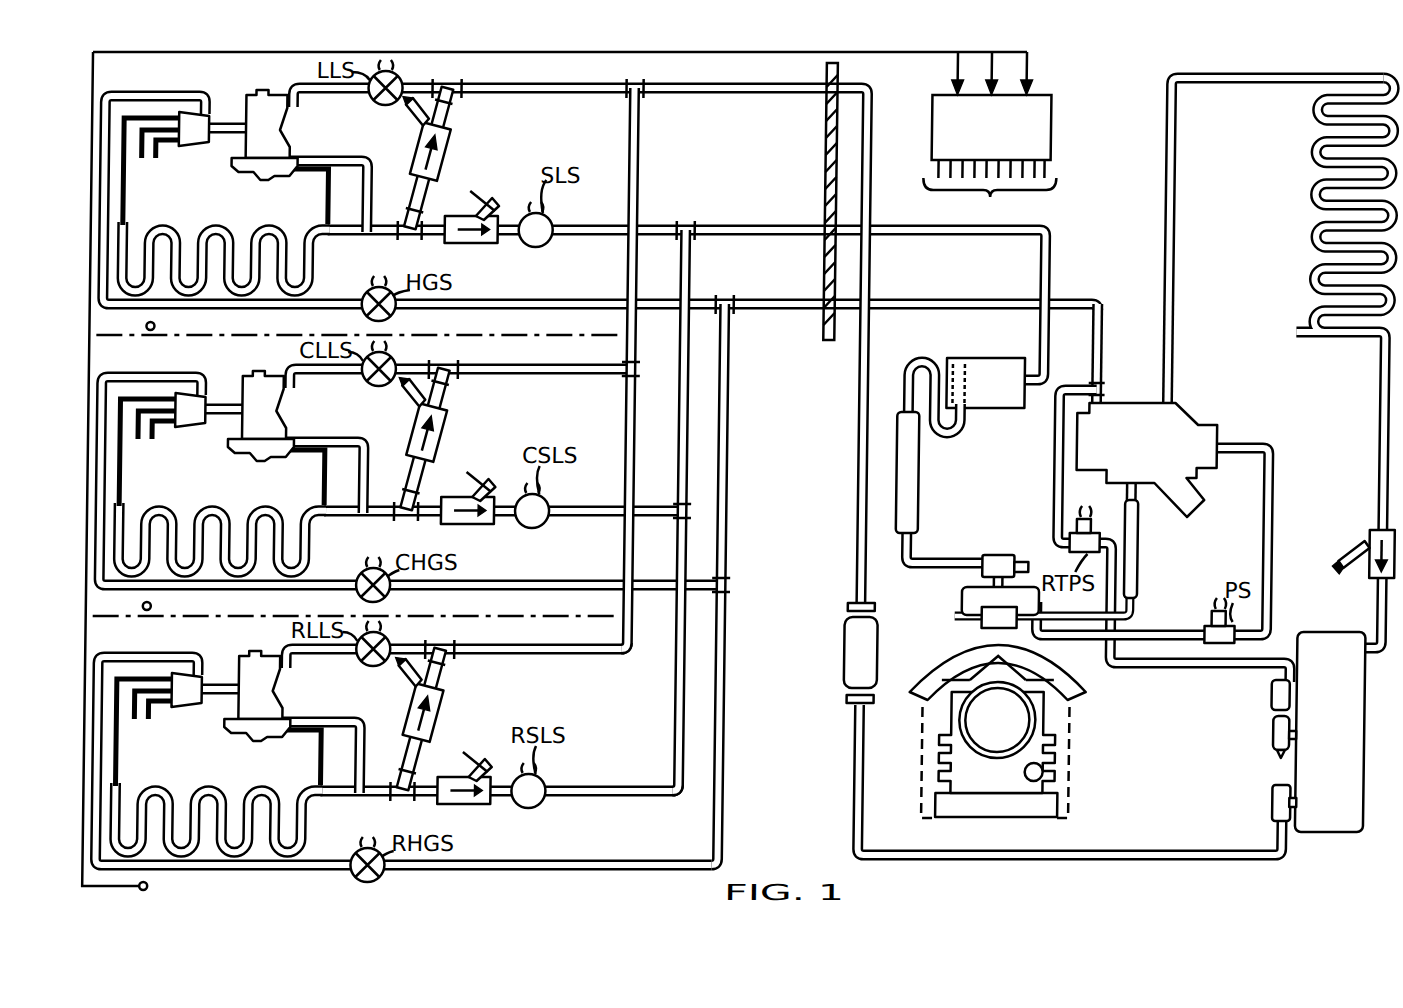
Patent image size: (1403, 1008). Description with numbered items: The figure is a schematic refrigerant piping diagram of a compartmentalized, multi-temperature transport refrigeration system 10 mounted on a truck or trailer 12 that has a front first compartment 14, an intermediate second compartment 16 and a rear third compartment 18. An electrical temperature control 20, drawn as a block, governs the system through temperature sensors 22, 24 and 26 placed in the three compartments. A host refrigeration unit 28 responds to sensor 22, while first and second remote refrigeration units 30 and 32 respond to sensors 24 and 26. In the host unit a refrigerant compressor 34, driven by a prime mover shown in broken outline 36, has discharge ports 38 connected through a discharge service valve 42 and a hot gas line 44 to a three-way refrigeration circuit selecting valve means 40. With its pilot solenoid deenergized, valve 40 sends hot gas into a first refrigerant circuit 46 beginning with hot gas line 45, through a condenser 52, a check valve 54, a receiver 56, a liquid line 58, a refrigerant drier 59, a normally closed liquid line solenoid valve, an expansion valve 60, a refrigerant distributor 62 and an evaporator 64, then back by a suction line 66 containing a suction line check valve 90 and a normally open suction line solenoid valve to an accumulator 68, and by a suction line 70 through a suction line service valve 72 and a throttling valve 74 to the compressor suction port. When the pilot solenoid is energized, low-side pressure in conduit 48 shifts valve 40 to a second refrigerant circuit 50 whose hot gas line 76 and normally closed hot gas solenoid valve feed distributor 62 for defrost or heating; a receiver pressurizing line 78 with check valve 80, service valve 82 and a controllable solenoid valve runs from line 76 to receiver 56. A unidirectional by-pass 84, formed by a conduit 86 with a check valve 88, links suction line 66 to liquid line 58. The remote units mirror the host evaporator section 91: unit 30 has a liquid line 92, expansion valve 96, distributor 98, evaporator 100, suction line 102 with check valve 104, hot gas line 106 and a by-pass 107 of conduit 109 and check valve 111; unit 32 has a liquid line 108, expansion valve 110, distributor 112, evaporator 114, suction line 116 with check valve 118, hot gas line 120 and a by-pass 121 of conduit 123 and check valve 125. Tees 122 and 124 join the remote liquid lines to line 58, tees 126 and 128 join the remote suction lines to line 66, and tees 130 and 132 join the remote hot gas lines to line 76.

The transport refrigeration system 10 is at (577, 888).
The truck or trailer 12 is at (827, 145).
The first compartment 14 is at (358, 323).
The second compartment 16 is at (355, 605).
The third compartment 18 is at (229, 885).
The electrical temperature control 20 is at (1052, 133).
The temperature sensor 22 is at (158, 328).
The temperature sensor 24 is at (169, 621).
The temperature sensor 26 is at (163, 885).
The host refrigeration unit 28 is at (984, 468).
The first remote refrigeration unit 30 is at (166, 452).
The second remote refrigeration unit 32 is at (162, 732).
The refrigerant compressor 34 is at (1066, 738).
The prime mover 36 is at (1068, 800).
The discharge ports 38 is at (1080, 680).
The refrigeration circuit selecting valve means 40 is at (1146, 460).
The discharge service valve 42 is at (975, 624).
The hot gas line 44 is at (1145, 545).
The hot gas line 45 is at (1178, 228).
The first refrigerant circuit 46 is at (1178, 355).
The conduit 48 is at (1150, 630).
The second refrigerant circuit 50 is at (1111, 353).
The condenser 52 is at (1318, 220).
The check valve 54 is at (1370, 545).
The receiver 56 is at (1320, 840).
The liquid line 58 is at (530, 95).
The refrigerant drier 59 is at (850, 650).
The expansion valve 60 is at (300, 118).
The refrigerant distributor 62 is at (190, 142).
The evaporator 64 is at (228, 222).
The suction line 66 is at (600, 222).
The accumulator 68 is at (975, 410).
The suction line 70 is at (925, 500).
The suction line service valve 72 is at (1000, 556).
The throttling valve 74 is at (968, 598).
The hot gas line 76 is at (966, 298).
The receiver pressurizing line 78 is at (1058, 492).
The check valve 80 is at (1278, 697).
The service valve 82 is at (1282, 740).
The suction line to liquid line by-pass 84 is at (455, 155).
The conduit 86 is at (428, 200).
The check valve 88 is at (406, 137).
The suction line check valve 90 is at (490, 196).
The evaporator section 91 is at (151, 171).
The liquid line 92 is at (459, 386).
The expansion valve 96 is at (296, 442).
The refrigerant distributor 98 is at (210, 423).
The evaporator 100 is at (222, 518).
The suction line 102 is at (503, 488).
The check valve 104 is at (488, 469).
The hot gas line 106 is at (411, 481).
The by-pass 107 is at (446, 439).
The liquid line 108 is at (457, 664).
The conduit 109 is at (458, 488).
The expansion valve 110 is at (292, 722).
The check valve 111 is at (391, 406).
The refrigerant distributor 112 is at (203, 703).
The evaporator 114 is at (219, 798).
The suction line 116 is at (499, 768).
The check valve 118 is at (481, 749).
The hot gas line 120 is at (404, 761).
The by-pass 121 is at (440, 719).
The tee 122 is at (630, 362).
The conduit 123 is at (454, 766).
The tee 124 is at (643, 120).
The check valve 125 is at (382, 686).
The tee 126 is at (680, 505).
The tee 128 is at (690, 215).
The tee 130 is at (738, 592).
The tee 132 is at (737, 302).